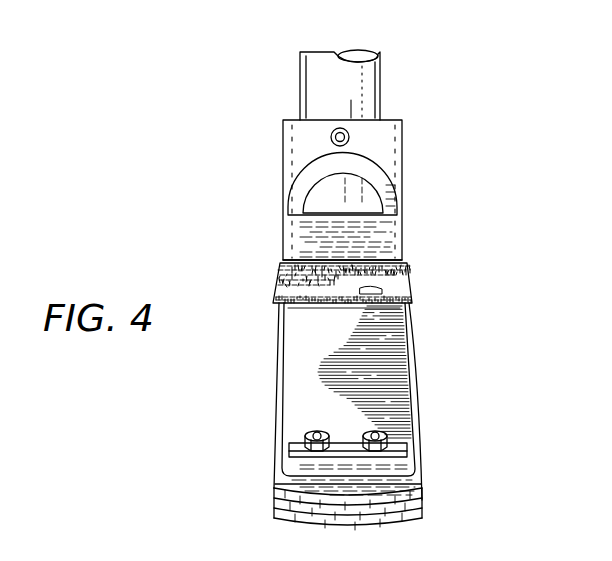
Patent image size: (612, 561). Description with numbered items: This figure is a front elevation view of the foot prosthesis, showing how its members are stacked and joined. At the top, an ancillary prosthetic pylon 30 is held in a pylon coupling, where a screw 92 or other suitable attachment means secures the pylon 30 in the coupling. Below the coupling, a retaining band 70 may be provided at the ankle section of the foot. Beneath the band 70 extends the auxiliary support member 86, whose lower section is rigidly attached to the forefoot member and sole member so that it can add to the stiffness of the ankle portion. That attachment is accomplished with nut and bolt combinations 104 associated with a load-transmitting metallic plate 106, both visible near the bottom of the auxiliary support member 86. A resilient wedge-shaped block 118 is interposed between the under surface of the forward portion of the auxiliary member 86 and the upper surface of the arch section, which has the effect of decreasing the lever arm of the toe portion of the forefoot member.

The ancillary prosthetic pylon 30 is at (382, 79).
The screw 92 is at (349, 141).
The retaining band 70 is at (380, 292).
The auxiliary support member 86 is at (312, 351).
The nut and bolt combinations 104 is at (313, 432).
The load-transmitting metallic plate 106 is at (408, 447).
The block 118 is at (423, 466).